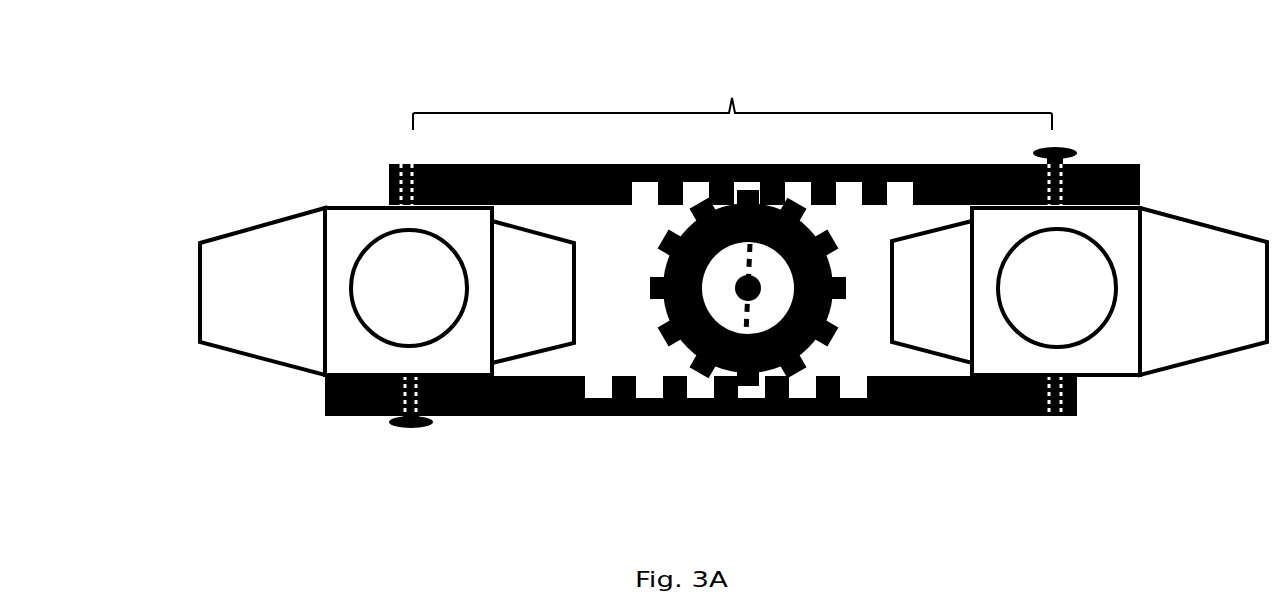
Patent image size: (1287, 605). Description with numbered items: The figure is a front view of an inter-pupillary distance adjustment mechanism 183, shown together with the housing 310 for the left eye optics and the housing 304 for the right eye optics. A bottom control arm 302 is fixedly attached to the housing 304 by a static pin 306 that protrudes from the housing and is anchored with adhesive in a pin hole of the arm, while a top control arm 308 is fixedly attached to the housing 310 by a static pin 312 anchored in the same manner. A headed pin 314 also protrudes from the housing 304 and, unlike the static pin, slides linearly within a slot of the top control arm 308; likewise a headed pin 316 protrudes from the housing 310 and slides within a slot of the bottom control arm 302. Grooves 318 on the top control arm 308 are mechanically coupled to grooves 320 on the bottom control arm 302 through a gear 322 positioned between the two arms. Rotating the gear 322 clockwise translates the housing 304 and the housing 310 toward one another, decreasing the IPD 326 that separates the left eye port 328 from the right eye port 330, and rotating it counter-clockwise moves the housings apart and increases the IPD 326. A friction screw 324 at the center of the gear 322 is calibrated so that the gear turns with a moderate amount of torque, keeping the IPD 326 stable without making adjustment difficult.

The inter-pupillary distance (IPD) adjustment mechanism 183 is at (121, 69).
The bottom control arm 302 is at (323, 416).
The housing for right eye optics 304 is at (1248, 359).
The static pin 306 is at (1052, 417).
The top control arm 308 is at (1143, 163).
The housing for left eye optics 310 is at (210, 229).
The static pin 312 is at (405, 163).
The headed pin 314 is at (1077, 152).
The headed pin 316 is at (388, 423).
The grooves 318 is at (820, 207).
The grooves 320 is at (618, 376).
The gear 322 is at (650, 289).
The friction screw 324 is at (776, 297).
The IPD 326 is at (733, 98).
The left eye port 328 is at (427, 300).
The right eye port 330 is at (1075, 300).